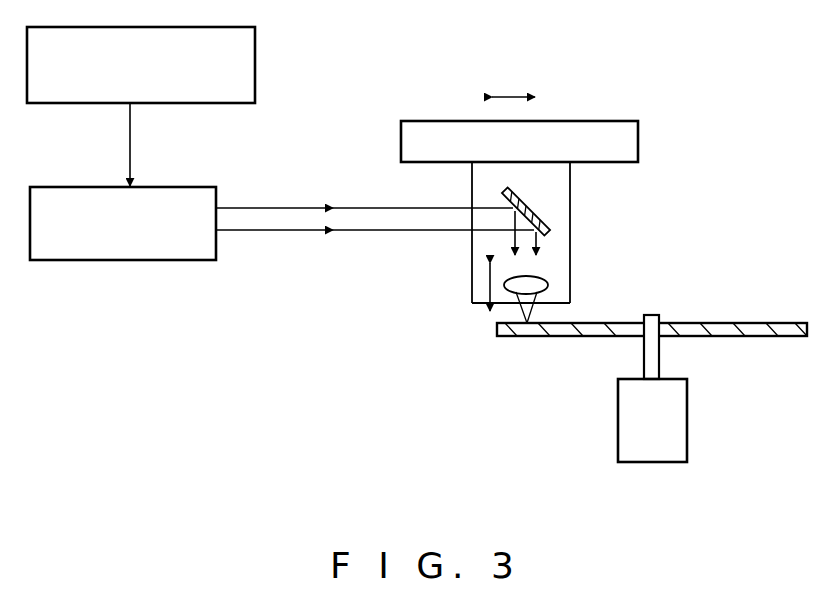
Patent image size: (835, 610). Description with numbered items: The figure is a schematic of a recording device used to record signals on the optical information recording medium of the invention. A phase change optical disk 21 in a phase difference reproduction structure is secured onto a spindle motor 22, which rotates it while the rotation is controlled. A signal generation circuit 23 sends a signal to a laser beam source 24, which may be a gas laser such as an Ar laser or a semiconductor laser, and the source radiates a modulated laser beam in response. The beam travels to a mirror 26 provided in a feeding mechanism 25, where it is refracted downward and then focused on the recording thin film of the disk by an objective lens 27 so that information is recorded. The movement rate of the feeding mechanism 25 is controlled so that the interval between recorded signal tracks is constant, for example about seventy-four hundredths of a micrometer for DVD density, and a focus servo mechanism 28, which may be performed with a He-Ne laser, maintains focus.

The phase change optical disk 21 is at (757, 336).
The spindle motor 22 is at (674, 424).
The signal generation circuit 23 is at (248, 64).
The laser beam source 24 is at (208, 248).
The feeding mechanism 25 is at (626, 134).
The mirror 26 is at (532, 212).
The objective lens 27 is at (551, 287).
The focus servo mechanism 28 is at (490, 283).